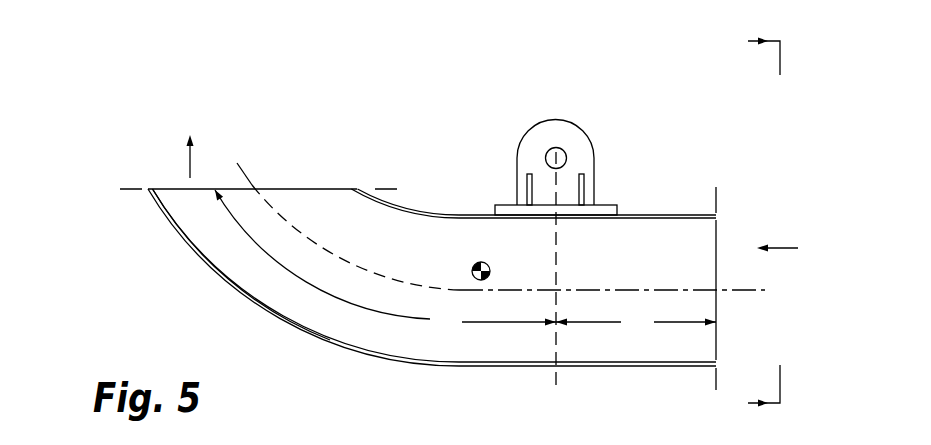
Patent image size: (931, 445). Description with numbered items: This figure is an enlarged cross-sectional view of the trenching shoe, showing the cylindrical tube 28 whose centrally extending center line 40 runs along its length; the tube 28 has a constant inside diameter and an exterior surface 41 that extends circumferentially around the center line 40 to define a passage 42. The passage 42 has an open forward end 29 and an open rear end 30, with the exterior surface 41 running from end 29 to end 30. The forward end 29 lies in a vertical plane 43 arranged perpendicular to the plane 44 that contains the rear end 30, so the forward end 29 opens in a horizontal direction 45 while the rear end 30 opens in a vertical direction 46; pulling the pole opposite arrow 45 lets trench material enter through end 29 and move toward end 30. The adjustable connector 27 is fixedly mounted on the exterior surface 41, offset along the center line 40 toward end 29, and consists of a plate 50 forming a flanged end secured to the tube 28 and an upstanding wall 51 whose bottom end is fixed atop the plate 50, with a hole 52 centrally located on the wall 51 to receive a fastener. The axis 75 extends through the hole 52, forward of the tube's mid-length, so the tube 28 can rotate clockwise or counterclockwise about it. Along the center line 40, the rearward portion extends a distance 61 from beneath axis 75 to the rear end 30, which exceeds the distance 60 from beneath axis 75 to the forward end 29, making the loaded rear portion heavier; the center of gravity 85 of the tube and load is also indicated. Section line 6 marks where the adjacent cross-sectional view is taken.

The section line 6- 6 is at (756, 223).
The adjustable connector 27 is at (590, 193).
The cylindrical tube 28 is at (270, 310).
The open forward end 29 is at (698, 345).
The open rear end 30 is at (303, 150).
The center line 40 is at (301, 228).
The exterior surface 41 is at (414, 206).
The passage 42 is at (243, 268).
The vertical plane 43 is at (720, 198).
The plane 44 is at (128, 187).
The horizontal direction 45 is at (779, 250).
The vertical direction opening 46 is at (188, 165).
The plate 50 is at (505, 205).
The upstanding wall 51 is at (538, 130).
The hole 52 is at (565, 153).
The distance 60 is at (636, 322).
The distance 61 is at (385, 261).
The axis 75 is at (556, 152).
The center of gravity 85 is at (477, 262).